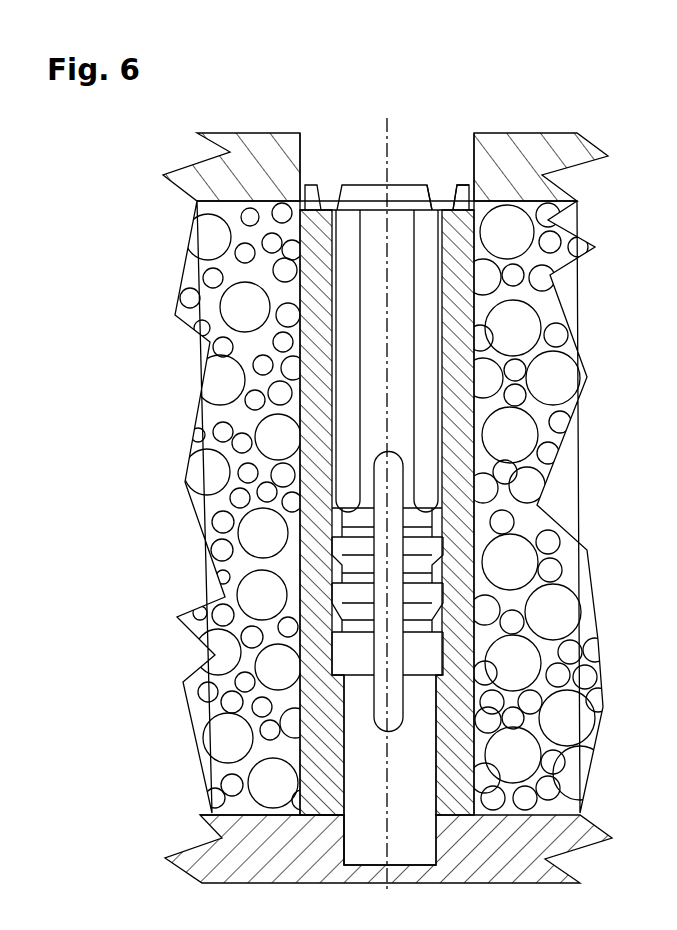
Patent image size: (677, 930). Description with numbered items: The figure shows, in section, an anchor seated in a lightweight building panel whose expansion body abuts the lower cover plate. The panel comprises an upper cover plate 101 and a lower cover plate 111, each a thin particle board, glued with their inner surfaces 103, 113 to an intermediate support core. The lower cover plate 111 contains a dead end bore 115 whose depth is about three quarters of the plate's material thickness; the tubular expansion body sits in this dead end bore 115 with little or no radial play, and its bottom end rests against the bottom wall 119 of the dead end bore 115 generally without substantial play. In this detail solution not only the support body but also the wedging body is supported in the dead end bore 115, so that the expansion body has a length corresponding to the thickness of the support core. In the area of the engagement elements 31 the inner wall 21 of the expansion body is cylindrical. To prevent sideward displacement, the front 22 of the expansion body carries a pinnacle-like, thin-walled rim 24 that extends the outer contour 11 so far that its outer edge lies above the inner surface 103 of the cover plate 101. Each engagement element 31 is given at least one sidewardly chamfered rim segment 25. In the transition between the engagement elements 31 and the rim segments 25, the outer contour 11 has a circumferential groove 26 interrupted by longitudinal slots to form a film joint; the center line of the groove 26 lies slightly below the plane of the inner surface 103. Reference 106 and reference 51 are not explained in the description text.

The cover plate 101 is at (198, 182).
The inner surface 103 is at (217, 200).
The outer contour 11 is at (300, 300).
The engagement element 31 is at (315, 342).
The inner wall 21 is at (332, 415).
The circumferential groove 26 is at (300, 198).
The rim segment 25 is at (357, 193).
The rim 24 is at (367, 172).
The gap 106 is at (438, 210).
The front 22 is at (466, 203).
The ribbed plug 51 is at (345, 769).
The inner surface 113 is at (245, 816).
The cover plate 111 is at (233, 828).
The dead end bore 115 is at (345, 843).
The bottom wall 119 is at (387, 865).